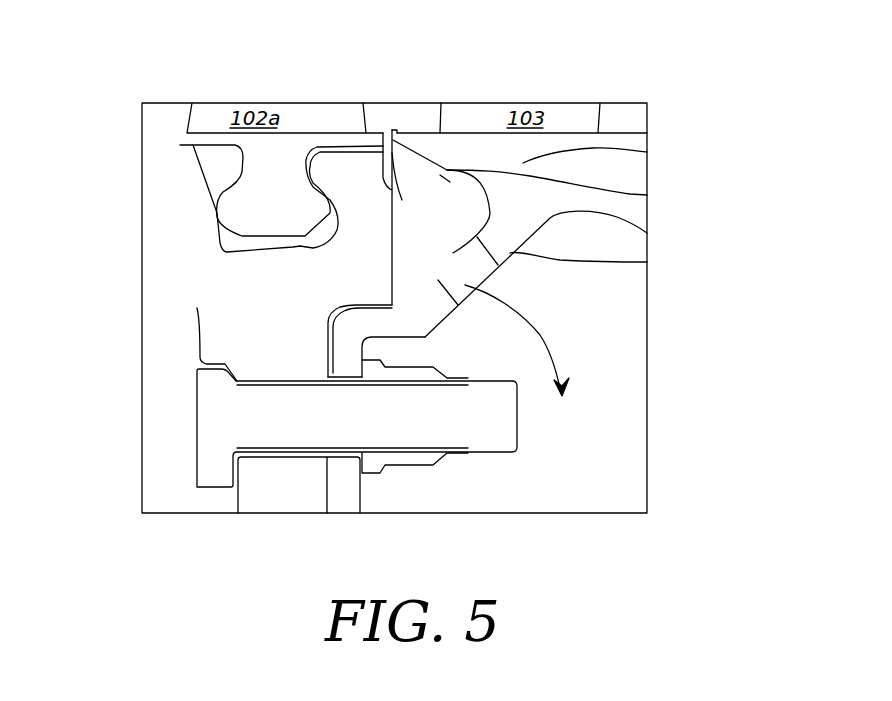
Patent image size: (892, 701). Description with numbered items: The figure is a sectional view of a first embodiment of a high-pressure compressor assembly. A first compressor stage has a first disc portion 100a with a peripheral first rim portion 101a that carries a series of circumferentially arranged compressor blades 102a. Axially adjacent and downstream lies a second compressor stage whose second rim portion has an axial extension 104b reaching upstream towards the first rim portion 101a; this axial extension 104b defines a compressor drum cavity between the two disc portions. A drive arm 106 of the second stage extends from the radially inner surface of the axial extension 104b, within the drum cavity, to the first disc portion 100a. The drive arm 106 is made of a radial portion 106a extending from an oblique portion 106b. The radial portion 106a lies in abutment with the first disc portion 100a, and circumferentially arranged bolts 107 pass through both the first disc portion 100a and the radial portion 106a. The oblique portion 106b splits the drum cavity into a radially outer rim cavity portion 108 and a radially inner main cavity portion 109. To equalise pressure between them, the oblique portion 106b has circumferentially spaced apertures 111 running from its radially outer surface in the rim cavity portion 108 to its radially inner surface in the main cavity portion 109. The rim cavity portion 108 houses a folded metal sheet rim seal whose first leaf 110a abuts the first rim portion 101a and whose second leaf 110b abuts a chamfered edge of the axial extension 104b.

The first disc portion 100a is at (260, 493).
The first rim portion 101a is at (363, 183).
The compressor blades 102a is at (281, 198).
The axial extension 104b is at (647, 152).
The drive arm 106 is at (530, 280).
The radial portion 106a is at (347, 362).
The oblique portion 106b is at (647, 262).
The bolts 107 is at (225, 415).
The rim cavity portion 108 is at (437, 259).
The main cavity portion 109 is at (622, 361).
The first leaf 110a is at (393, 186).
The second leaf 110b is at (647, 195).
The apertures 111 is at (432, 205).